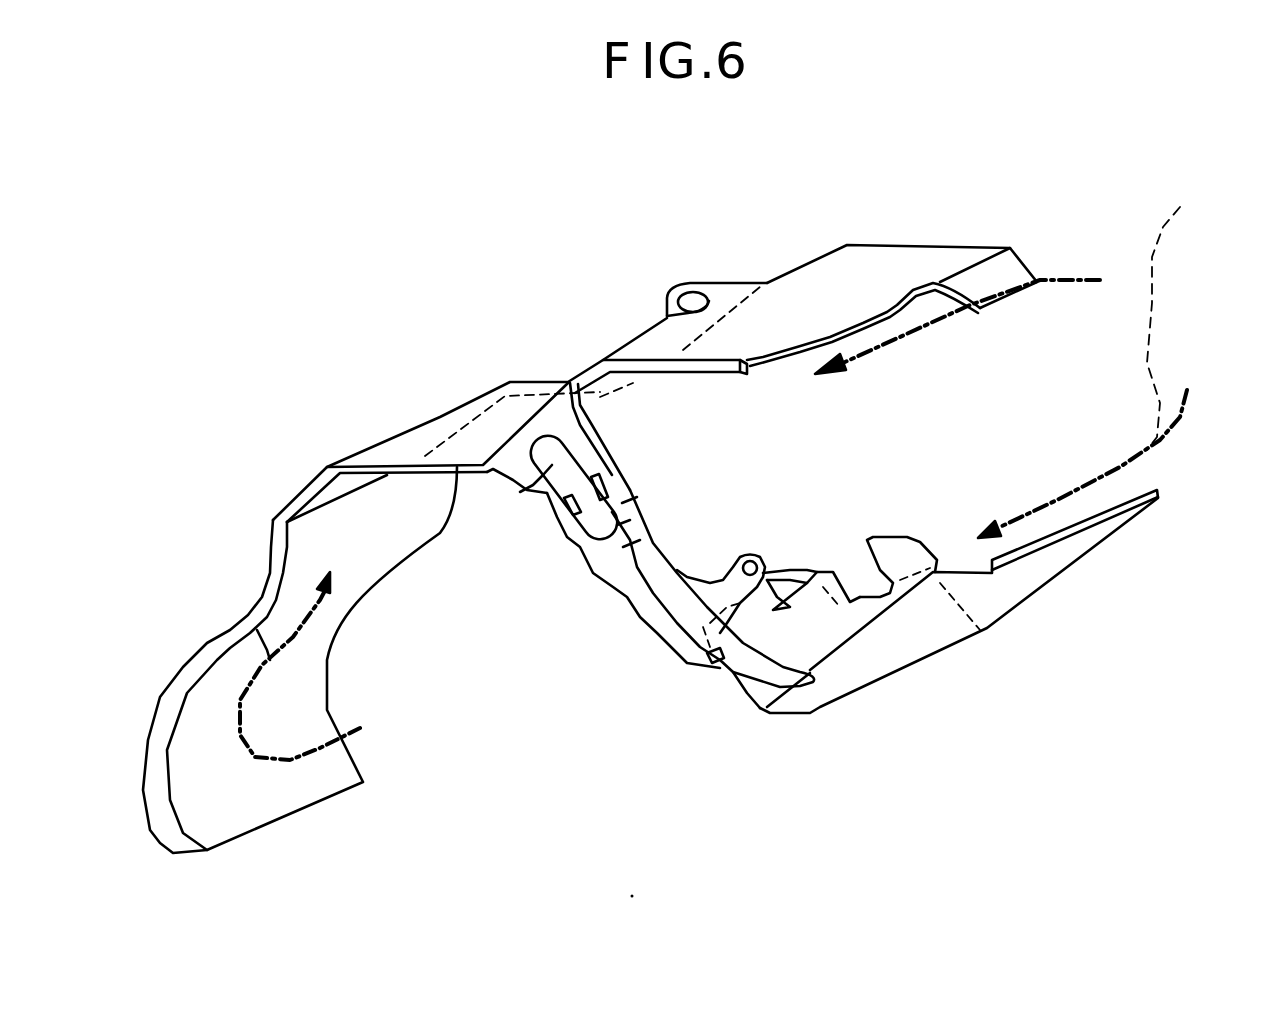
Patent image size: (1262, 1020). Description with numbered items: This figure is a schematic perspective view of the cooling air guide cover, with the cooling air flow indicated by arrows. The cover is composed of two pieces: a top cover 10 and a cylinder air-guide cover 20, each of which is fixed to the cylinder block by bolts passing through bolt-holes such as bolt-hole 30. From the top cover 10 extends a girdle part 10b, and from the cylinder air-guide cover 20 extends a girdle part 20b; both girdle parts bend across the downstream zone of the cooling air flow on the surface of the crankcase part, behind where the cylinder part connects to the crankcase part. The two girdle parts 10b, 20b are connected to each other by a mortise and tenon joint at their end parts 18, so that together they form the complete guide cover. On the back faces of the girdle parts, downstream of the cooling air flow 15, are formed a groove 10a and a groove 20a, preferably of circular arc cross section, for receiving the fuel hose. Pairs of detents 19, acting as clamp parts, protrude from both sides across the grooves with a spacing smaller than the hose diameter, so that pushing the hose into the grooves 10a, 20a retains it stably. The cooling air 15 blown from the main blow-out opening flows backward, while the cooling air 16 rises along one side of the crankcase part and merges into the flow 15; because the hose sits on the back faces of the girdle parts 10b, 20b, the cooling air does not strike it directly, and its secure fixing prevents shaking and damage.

The top cover 10 is at (543, 382).
The groove 10a is at (547, 493).
The girdle part 10b is at (597, 460).
The cooling air flow 15 is at (1073, 278).
The cooling air 16 is at (257, 623).
The end parts 18 is at (647, 520).
The detents 19 is at (557, 507).
The cylinder air-guide cover 20 is at (938, 633).
The groove 20a is at (673, 617).
The girdle part 20b is at (680, 577).
The bolt-hole 30 is at (758, 560).